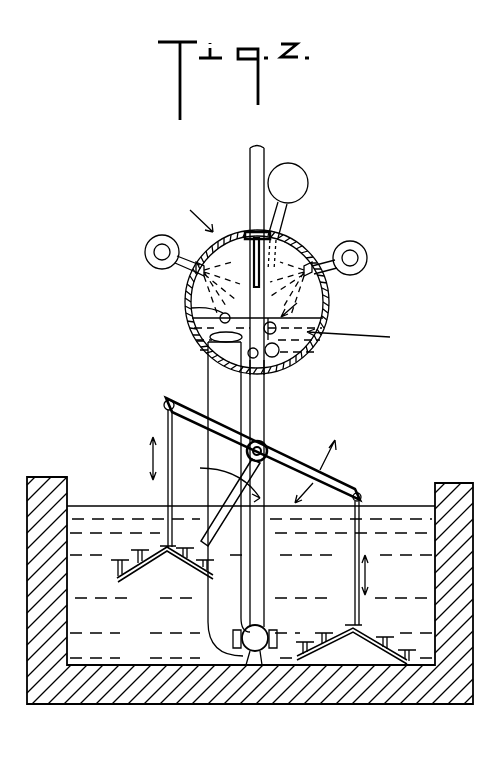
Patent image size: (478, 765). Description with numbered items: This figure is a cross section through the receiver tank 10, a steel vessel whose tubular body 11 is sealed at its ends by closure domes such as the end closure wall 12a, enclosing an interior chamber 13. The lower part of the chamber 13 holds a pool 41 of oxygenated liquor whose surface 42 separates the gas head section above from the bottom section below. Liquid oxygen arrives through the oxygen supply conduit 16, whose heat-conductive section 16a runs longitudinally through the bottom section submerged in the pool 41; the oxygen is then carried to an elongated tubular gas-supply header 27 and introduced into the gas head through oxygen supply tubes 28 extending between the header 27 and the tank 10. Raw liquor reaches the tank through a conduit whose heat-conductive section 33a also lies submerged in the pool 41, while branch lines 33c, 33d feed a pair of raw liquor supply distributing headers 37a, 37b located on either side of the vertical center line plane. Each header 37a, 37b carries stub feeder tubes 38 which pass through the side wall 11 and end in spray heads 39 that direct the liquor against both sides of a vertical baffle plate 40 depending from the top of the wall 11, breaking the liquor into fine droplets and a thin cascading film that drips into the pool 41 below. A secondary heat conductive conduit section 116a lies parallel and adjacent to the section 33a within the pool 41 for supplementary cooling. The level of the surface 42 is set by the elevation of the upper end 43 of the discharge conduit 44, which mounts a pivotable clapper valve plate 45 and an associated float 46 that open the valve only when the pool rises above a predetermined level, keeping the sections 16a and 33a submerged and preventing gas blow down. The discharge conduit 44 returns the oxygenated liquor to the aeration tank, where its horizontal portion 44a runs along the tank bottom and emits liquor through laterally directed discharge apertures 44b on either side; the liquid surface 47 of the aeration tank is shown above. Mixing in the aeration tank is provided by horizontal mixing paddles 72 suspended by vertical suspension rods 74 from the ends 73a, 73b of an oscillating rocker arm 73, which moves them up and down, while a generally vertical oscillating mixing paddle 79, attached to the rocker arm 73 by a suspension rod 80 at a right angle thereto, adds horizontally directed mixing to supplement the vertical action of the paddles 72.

The receiver tank 10 is at (208, 247).
The tubular body 11 is at (318, 342).
The closure dome 12a is at (297, 255).
The interior chamber 13 is at (241, 262).
The oxygen supply conduit 16 is at (250, 155).
The heat-conductive section of oxygen supply conduit 16a is at (263, 373).
The gas-supply header 27 is at (301, 172).
The oxygen supply tube 28 is at (285, 217).
The heat-conductive section of raw liquor supply conduit 33a is at (313, 352).
The branch line 33c is at (158, 250).
The branch line 33d is at (360, 261).
The raw liquor supply distributing header 37a is at (146, 261).
The raw liquor supply distributing header 37b is at (359, 249).
The stub feeder tube 38 is at (186, 268).
The spray head 39 is at (206, 256).
The baffle plate 40 is at (246, 233).
The oxygenated liquor pool 41 is at (305, 335).
The liquid surface 42 is at (292, 279).
The upper end of discharge conduit 43 is at (208, 367).
The discharge conduit 44 is at (208, 383).
The horizontal portion of return conduit 44a is at (247, 658).
The discharge aperture 44b is at (234, 638).
The clapper valve plate 45 is at (195, 334).
The float 46 is at (197, 306).
The liquid surface in aeration tank 47 is at (410, 487).
The mixing paddle 72 is at (125, 562).
The rocker arm 73 is at (283, 455).
The rocker arm end 73a is at (164, 407).
The rocker arm end 73b is at (354, 493).
The suspension rod 74 is at (374, 494).
The oscillating mixing paddle 79 is at (223, 537).
The suspension rod 80 is at (222, 478).
The heat conductive conduit section 116a is at (285, 372).